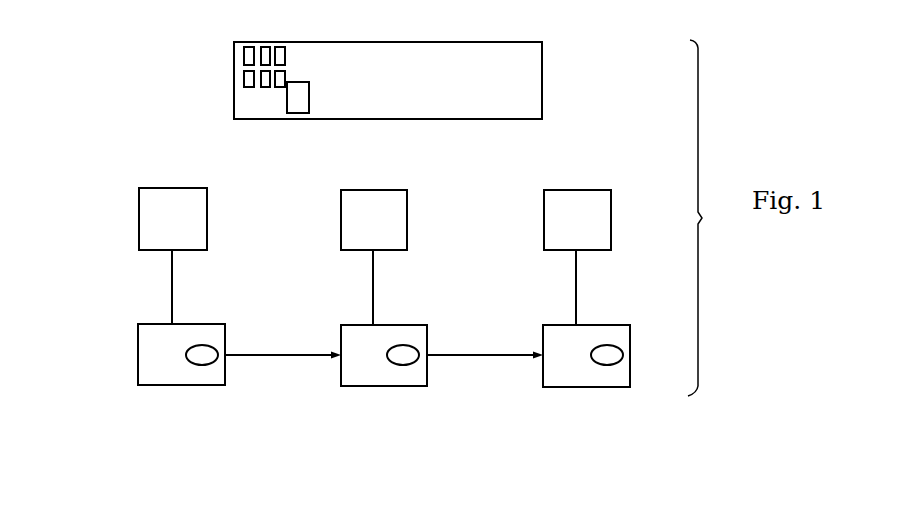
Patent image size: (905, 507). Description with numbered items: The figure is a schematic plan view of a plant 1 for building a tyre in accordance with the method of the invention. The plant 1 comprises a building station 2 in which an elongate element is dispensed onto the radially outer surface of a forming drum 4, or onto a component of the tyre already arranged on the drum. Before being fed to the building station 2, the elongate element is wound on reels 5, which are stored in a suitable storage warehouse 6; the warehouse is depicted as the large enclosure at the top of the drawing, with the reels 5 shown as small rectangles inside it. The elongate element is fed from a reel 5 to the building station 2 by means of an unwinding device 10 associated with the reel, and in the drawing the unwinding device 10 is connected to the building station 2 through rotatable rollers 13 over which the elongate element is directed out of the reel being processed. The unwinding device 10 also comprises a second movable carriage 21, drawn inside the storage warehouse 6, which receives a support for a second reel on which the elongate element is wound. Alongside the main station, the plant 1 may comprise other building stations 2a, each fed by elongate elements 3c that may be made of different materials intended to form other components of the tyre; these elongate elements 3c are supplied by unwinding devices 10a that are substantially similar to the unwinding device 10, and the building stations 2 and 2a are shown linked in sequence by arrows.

The plant 1 is at (110, 131).
The building station 2 is at (148, 355).
The other building stations 2a is at (374, 373).
The elongate elements 3c is at (374, 298).
The forming drum 4 is at (207, 360).
The reels 5 is at (242, 52).
The storage warehouse 6 is at (382, 36).
The unwinding device 10 is at (158, 221).
The unwinding devices 10a is at (397, 232).
The rotatable rollers 13 is at (171, 292).
The second movable carriage 21 is at (294, 118).